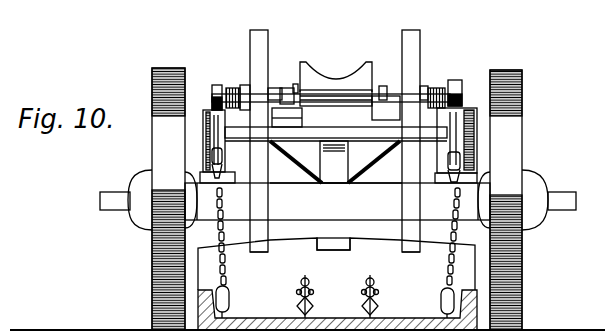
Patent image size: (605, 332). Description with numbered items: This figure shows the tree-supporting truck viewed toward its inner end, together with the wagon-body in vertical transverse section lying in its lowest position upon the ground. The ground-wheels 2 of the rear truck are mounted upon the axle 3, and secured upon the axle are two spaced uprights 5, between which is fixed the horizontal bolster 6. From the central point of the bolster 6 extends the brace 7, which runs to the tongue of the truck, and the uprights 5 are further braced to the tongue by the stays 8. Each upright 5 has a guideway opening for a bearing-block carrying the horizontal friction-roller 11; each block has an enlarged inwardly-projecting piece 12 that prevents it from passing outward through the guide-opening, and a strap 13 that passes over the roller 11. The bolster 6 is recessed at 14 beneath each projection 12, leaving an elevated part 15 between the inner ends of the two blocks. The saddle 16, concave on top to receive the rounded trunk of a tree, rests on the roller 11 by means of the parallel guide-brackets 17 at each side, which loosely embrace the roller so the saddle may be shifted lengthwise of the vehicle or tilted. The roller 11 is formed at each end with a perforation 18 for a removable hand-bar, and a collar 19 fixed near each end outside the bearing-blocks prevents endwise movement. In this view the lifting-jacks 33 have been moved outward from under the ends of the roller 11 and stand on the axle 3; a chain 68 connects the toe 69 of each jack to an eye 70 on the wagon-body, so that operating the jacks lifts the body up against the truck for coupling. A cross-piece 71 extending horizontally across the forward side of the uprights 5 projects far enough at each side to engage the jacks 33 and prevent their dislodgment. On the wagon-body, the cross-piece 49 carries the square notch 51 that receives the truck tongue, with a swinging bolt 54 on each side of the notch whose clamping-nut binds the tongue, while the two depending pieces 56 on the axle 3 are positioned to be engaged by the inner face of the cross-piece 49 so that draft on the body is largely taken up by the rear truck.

The ground-wheels 2 is at (522, 145).
The axle 3 is at (337, 201).
The uprights 5 is at (420, 78).
The bolster 6 is at (300, 120).
The brace 7 is at (334, 162).
The stays 8 is at (292, 164).
The friction-roller 11 is at (295, 84).
The inwardly-projecting piece 12 is at (270, 82).
The strap 13 is at (292, 86).
The recess 14 is at (375, 138).
The elevated part 15 is at (344, 108).
The saddle 16 is at (362, 72).
The guide-brackets 17 is at (383, 86).
The perforation 18 is at (214, 85).
The collar 19 is at (240, 88).
The lifting-jack 33 is at (210, 100).
The cross-piece 49 is at (296, 236).
The notch 51 is at (333, 255).
The swinging bolt 54 is at (313, 290).
The depending pieces 56 is at (262, 253).
The chain 68 is at (224, 258).
The toe 69 is at (212, 157).
The eye 70 is at (229, 304).
The cross-piece 71 is at (312, 144).